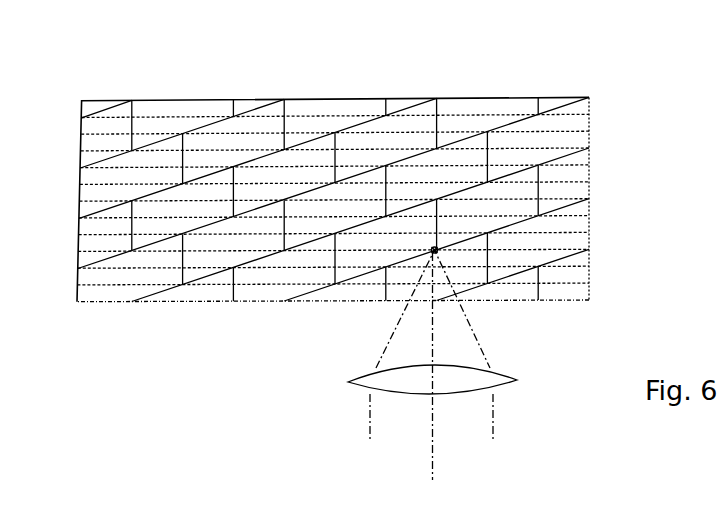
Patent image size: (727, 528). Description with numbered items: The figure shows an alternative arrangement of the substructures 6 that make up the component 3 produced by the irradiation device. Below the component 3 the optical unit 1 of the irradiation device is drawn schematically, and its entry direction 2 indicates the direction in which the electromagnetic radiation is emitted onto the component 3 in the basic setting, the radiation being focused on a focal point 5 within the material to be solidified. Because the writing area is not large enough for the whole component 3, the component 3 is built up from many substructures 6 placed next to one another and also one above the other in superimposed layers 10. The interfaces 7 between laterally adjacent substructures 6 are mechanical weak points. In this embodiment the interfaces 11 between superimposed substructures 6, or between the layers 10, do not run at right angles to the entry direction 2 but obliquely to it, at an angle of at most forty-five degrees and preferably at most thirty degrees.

The optical unit 1 is at (345, 392).
The entry direction 2 is at (432, 467).
The component 3 is at (56, 71).
The focal point 5 is at (440, 255).
The substructure 6 is at (370, 136).
The interface 7 is at (128, 225).
The layer 10 is at (523, 77).
The interface 11 is at (512, 124).